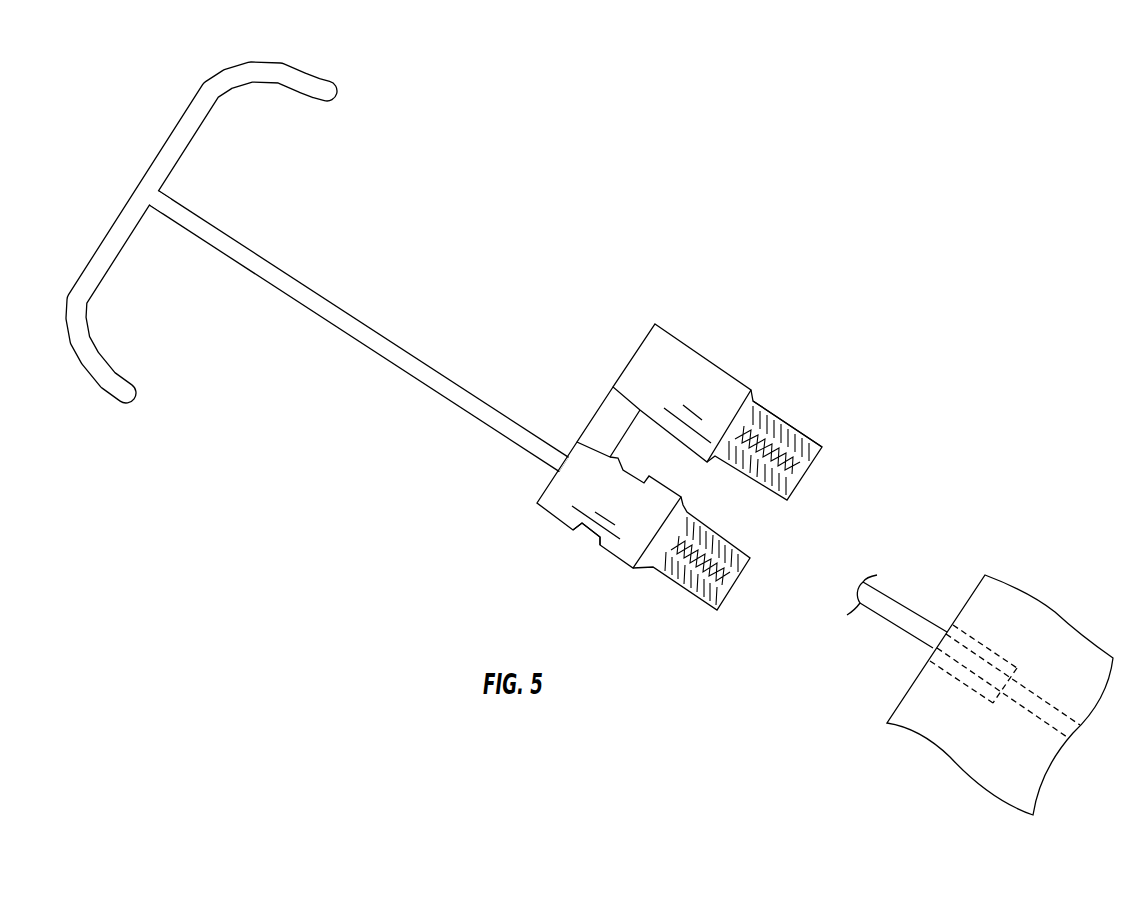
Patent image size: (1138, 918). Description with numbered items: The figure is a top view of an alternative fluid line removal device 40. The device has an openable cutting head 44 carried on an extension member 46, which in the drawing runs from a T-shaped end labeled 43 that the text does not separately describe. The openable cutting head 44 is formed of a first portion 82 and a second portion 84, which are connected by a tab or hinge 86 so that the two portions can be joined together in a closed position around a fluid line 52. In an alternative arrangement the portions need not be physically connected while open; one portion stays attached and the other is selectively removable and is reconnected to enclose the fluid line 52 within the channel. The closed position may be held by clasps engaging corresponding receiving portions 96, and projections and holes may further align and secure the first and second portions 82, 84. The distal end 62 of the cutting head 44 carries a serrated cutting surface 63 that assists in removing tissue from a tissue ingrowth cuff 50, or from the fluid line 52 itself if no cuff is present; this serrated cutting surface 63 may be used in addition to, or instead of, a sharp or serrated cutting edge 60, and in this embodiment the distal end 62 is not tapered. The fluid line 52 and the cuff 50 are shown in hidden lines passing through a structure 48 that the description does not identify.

The fluid line removal device 40 is at (634, 226).
The handle 43 is at (322, 85).
The openable cutting head 44 is at (786, 354).
The extension member 46 is at (315, 296).
The implant plate 48 is at (903, 727).
The tissue ingrowth cuff 50 is at (945, 675).
The fluid line 52 is at (930, 624).
The cutting edge 60 is at (815, 470).
The distal end 62 is at (813, 447).
The serrated cutting surface 63 is at (783, 420).
The first portion 82 is at (713, 352).
The second portion 84 is at (553, 516).
The tab or hinge 86 is at (600, 420).
The receiving portions 96 is at (600, 539).